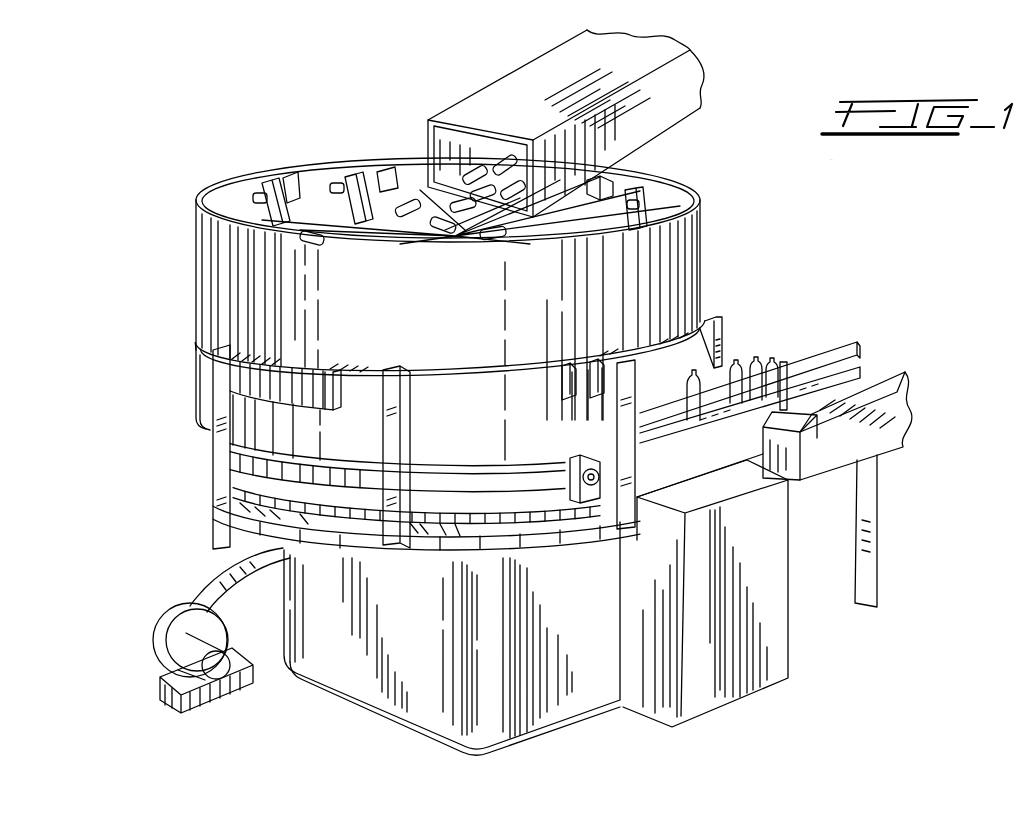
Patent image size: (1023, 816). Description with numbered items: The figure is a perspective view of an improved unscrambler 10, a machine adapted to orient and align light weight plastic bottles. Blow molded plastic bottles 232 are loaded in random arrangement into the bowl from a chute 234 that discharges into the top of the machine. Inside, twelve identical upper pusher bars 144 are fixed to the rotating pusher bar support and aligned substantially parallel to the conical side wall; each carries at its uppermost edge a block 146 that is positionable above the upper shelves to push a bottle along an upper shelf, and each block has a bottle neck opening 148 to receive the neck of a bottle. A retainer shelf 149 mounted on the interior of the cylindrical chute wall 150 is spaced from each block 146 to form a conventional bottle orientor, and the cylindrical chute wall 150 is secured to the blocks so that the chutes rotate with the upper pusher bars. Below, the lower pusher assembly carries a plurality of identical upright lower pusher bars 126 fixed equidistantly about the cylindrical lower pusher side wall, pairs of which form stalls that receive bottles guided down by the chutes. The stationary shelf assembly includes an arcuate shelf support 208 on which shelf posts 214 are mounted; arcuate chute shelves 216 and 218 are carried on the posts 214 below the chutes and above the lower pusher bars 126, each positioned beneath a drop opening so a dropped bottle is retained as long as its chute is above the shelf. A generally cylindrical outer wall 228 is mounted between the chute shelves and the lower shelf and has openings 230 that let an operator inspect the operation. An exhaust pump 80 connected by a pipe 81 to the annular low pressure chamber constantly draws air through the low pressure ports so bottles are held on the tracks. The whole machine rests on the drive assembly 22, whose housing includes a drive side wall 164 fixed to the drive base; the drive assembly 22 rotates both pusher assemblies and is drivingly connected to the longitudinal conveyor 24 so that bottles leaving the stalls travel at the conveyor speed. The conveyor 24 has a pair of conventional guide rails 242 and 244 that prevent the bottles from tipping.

The unscrambler 10 is at (720, 261).
The drive assembly 22 is at (434, 745).
The longitudinal conveyor 24 is at (825, 337).
The exhaust pump 80 is at (143, 630).
The pipe 81 is at (215, 562).
The lower pusher bars 126 is at (580, 370).
The upper pusher bars 144 is at (380, 224).
The block 146 is at (267, 185).
The bottle neck opening 148 is at (253, 196).
The retainer shelf 149 is at (290, 180).
The cylindrical chute wall 150 is at (200, 277).
The drive side wall 164 is at (585, 680).
The arcuate shelf support 208 is at (420, 552).
The shelf posts 214 is at (213, 440).
The chute shelf 216 is at (340, 352).
The chute shelf 218 is at (720, 323).
The cylindrical outer wall 228 is at (490, 378).
The openings 230 is at (325, 398).
The plastic bottles 232 is at (510, 165).
The chute 234 is at (655, 122).
The guide rail 242 is at (867, 340).
The guide rail 244 is at (870, 387).